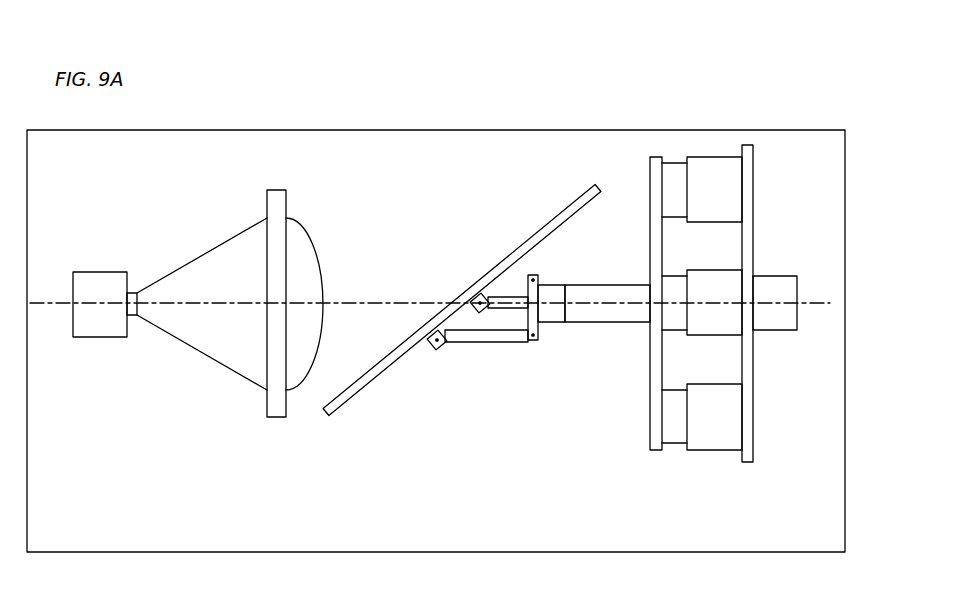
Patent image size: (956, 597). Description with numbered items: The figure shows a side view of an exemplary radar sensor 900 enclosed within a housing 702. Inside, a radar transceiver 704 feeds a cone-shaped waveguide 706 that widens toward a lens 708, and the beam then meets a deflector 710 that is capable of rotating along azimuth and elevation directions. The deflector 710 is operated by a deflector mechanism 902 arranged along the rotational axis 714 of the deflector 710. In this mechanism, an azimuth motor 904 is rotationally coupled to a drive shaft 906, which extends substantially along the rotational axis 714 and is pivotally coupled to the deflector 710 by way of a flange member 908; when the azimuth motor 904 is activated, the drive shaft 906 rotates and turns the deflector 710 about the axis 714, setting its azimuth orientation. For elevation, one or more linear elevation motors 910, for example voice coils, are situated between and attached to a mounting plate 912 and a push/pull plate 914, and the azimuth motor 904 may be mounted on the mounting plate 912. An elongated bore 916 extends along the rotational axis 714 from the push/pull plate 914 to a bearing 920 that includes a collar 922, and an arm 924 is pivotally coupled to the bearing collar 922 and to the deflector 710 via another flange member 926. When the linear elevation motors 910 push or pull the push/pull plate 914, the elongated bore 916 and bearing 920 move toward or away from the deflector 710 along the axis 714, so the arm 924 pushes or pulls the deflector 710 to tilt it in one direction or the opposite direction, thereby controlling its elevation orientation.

The housing 702 is at (557, 552).
The radar transceiver 704 is at (95, 322).
The cone-shaped waveguide 706 is at (212, 330).
The lens 708 is at (305, 257).
The deflector 710 is at (350, 402).
The rotational axis 714 is at (50, 300).
The radar sensor 900 is at (567, 120).
The deflector mechanism 902 is at (768, 230).
The azimuth motor 904 is at (768, 287).
The drive shaft 906 is at (507, 310).
The flange member 908 is at (473, 315).
The linear elevation motor 910 is at (722, 183).
The mounting plate 912 is at (753, 405).
The push/pull plate 914 is at (650, 405).
The elongated bore 916 is at (612, 320).
The bearing 920 is at (553, 317).
The collar 922 is at (530, 277).
The arm 924 is at (453, 345).
The flange member 926 is at (427, 345).